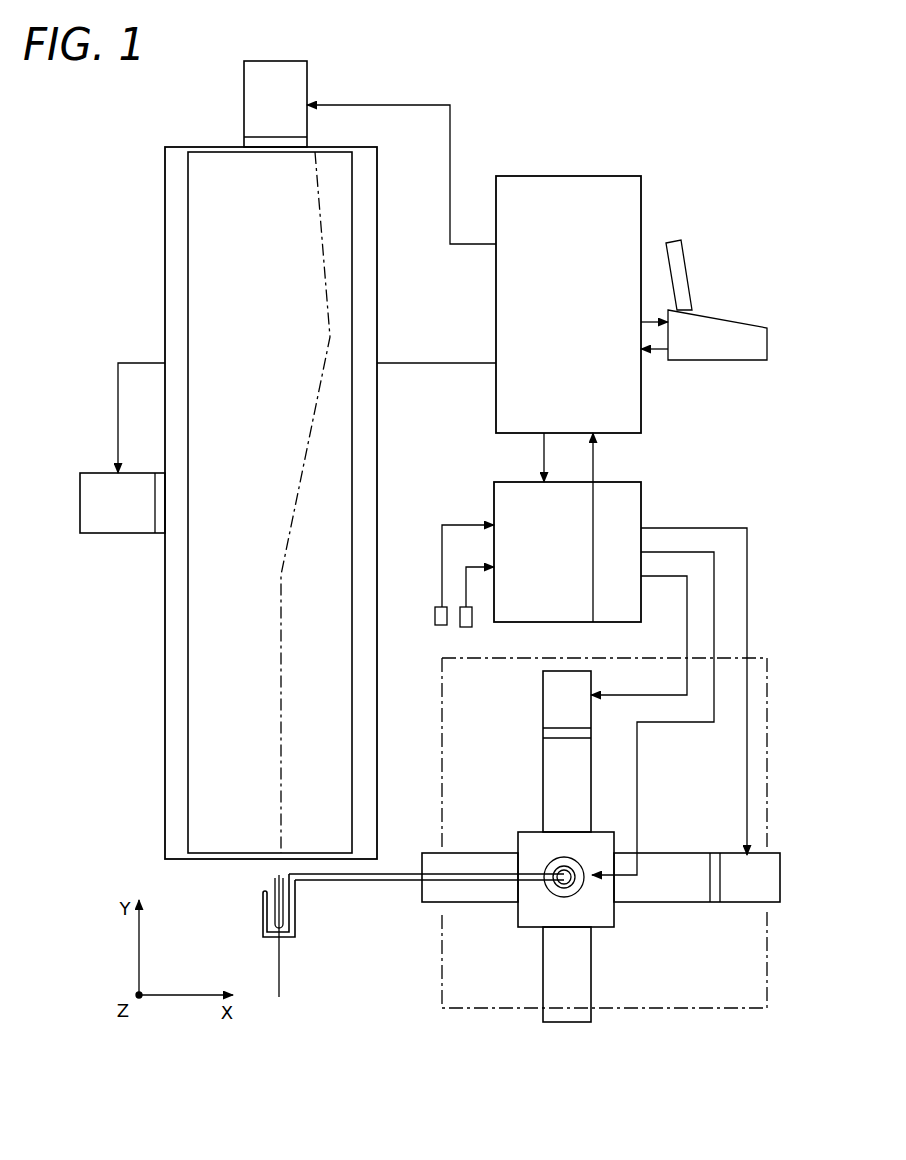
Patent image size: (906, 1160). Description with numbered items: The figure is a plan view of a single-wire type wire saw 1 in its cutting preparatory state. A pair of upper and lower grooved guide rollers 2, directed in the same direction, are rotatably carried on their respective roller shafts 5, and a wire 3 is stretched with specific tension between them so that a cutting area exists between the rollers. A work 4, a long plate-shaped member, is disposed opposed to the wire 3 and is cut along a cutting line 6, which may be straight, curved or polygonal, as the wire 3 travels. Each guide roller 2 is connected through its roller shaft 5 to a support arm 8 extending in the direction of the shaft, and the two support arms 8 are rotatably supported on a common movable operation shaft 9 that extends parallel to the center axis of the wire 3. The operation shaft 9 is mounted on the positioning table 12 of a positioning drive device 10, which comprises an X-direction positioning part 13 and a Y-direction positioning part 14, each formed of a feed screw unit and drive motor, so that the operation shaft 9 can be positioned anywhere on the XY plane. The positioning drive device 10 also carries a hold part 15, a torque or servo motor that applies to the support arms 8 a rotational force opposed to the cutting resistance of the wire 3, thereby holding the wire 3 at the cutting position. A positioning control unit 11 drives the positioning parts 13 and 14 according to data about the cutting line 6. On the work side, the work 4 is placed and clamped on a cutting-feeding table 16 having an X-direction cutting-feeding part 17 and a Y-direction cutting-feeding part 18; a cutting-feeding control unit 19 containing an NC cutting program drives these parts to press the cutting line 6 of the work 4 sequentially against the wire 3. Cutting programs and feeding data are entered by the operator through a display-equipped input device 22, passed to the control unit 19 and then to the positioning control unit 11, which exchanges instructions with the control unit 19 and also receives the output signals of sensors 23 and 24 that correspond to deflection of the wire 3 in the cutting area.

The single-wire type wire saw 1 is at (493, 132).
The grooved guide rollers 2 is at (280, 920).
The wire 3 is at (277, 875).
The work 4 is at (352, 552).
The roller shafts 5 is at (272, 903).
The cutting line 6 is at (280, 598).
The support arm 8 is at (402, 872).
The operation shaft 9 is at (563, 882).
The positioning drive device 10 is at (442, 963).
The positioning control unit 11 is at (641, 502).
The positioning table 12 is at (527, 843).
The positioning part 13 is at (712, 903).
The positioning part 14 is at (543, 747).
The hold part 15 is at (583, 890).
The cutting-feeding table 16 is at (377, 423).
The X-direction cutting-feeding part 17 is at (134, 530).
The Y-direction cutting-feeding part 18 is at (244, 108).
The cutting-feeding control unit 19 is at (641, 213).
The display-equipped input device 22 is at (708, 362).
The sensor 23 is at (433, 610).
The sensor 24 is at (472, 612).